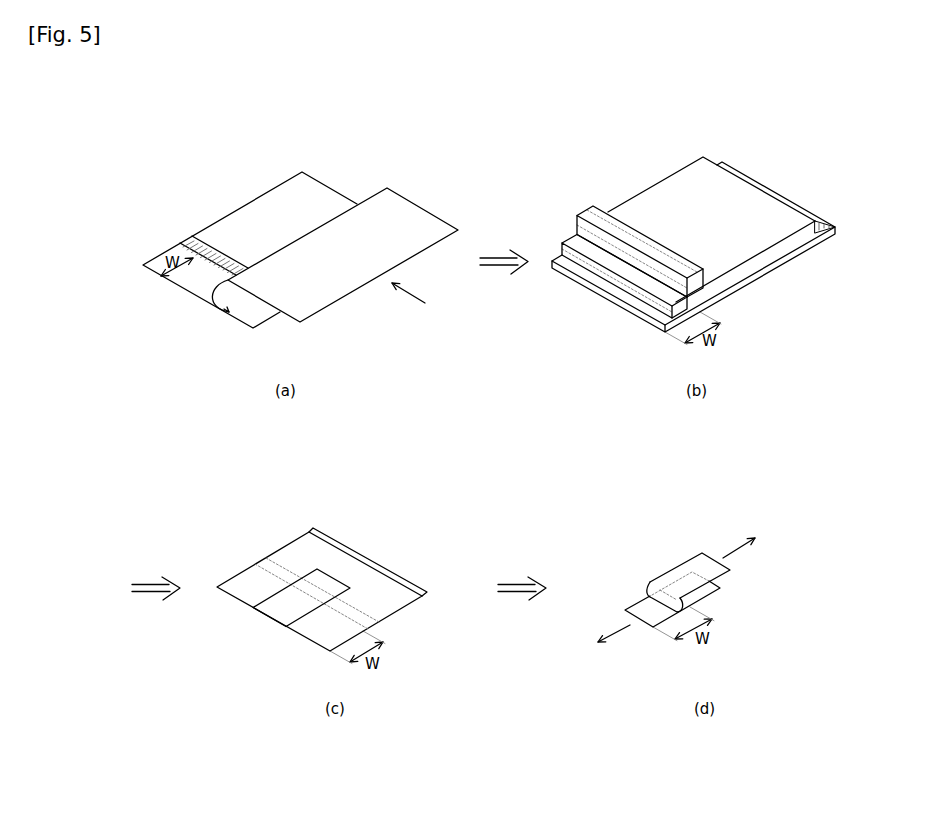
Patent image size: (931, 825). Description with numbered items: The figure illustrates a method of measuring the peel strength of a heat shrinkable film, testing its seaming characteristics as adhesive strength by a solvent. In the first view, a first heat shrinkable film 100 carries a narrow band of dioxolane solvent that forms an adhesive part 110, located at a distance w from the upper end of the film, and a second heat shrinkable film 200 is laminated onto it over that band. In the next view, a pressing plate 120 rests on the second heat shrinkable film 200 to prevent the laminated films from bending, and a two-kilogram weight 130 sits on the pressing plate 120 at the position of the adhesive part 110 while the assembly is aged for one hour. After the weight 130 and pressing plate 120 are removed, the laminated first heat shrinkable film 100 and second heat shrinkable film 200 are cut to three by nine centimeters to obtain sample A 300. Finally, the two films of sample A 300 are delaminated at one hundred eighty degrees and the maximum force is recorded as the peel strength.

The first heat shrinkable film 100 is at (243, 215).
The adhesive part 110 is at (185, 244).
The pressing plate 120 is at (643, 298).
The weight 130 is at (590, 210).
The second heat shrinkable film 200 is at (407, 205).
The sample A 300 is at (277, 618).